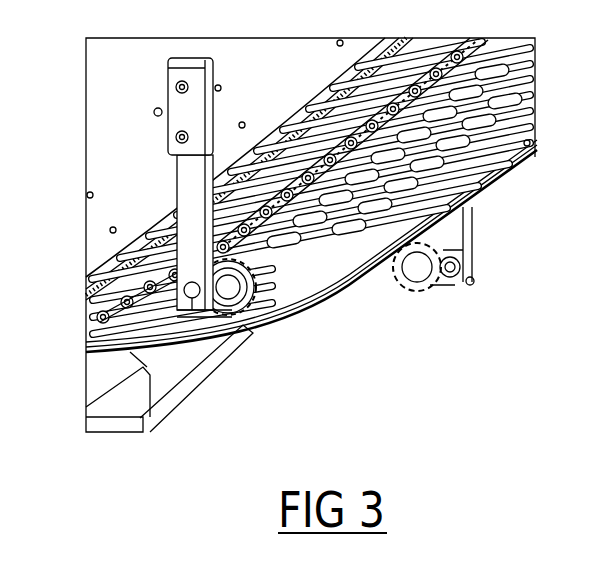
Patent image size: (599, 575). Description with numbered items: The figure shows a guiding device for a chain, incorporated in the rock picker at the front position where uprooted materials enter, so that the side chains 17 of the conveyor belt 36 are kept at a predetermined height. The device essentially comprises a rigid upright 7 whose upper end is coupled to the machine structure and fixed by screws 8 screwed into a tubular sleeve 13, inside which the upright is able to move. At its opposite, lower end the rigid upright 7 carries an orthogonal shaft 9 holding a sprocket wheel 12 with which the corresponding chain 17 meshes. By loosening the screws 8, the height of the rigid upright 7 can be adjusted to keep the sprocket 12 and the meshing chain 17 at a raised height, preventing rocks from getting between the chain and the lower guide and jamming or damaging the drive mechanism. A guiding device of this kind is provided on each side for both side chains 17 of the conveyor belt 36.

The rigid upright 7 is at (126, 179).
The screws 8 is at (177, 137).
The orthogonal shaft 9 is at (245, 330).
The sprocket wheel 12 is at (455, 286).
The tubular sleeve 13 is at (175, 80).
The side chains 17 is at (87, 352).
The conveyor belt 36 is at (325, 266).